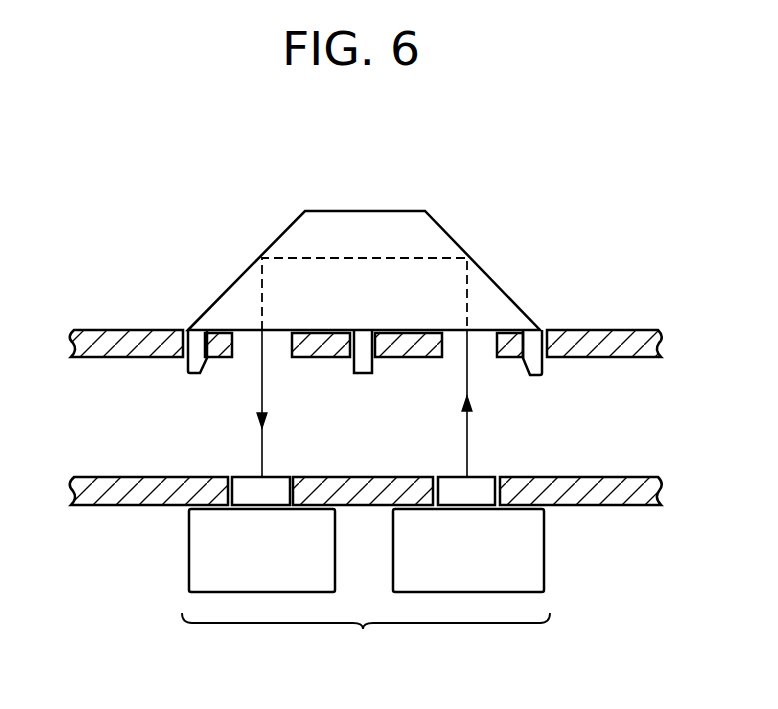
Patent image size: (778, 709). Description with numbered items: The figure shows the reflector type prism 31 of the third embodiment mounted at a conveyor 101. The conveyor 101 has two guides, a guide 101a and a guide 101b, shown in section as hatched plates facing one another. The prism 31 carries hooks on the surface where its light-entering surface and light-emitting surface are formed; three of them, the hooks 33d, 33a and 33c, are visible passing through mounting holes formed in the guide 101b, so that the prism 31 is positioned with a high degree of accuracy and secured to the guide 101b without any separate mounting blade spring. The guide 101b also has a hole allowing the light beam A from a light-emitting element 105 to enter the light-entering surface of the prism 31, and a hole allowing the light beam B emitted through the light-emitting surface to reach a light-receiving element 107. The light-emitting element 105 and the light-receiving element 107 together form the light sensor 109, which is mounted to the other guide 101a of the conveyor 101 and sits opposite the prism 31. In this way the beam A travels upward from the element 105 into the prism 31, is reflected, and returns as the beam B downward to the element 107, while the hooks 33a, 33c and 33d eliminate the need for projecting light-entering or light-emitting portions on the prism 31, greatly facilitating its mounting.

The reflector type prism 31 is at (385, 211).
The hook 33a is at (363, 376).
The hook 33c is at (533, 378).
The hook 33d is at (193, 376).
The conveyor 101 is at (675, 443).
The guide 101a is at (605, 505).
The guide 101b is at (612, 330).
The light-emitting element 105 is at (493, 565).
The light-receiving element 107 is at (288, 565).
The light sensor 109 is at (366, 642).
The light beam A is at (467, 443).
The light beam B is at (267, 395).